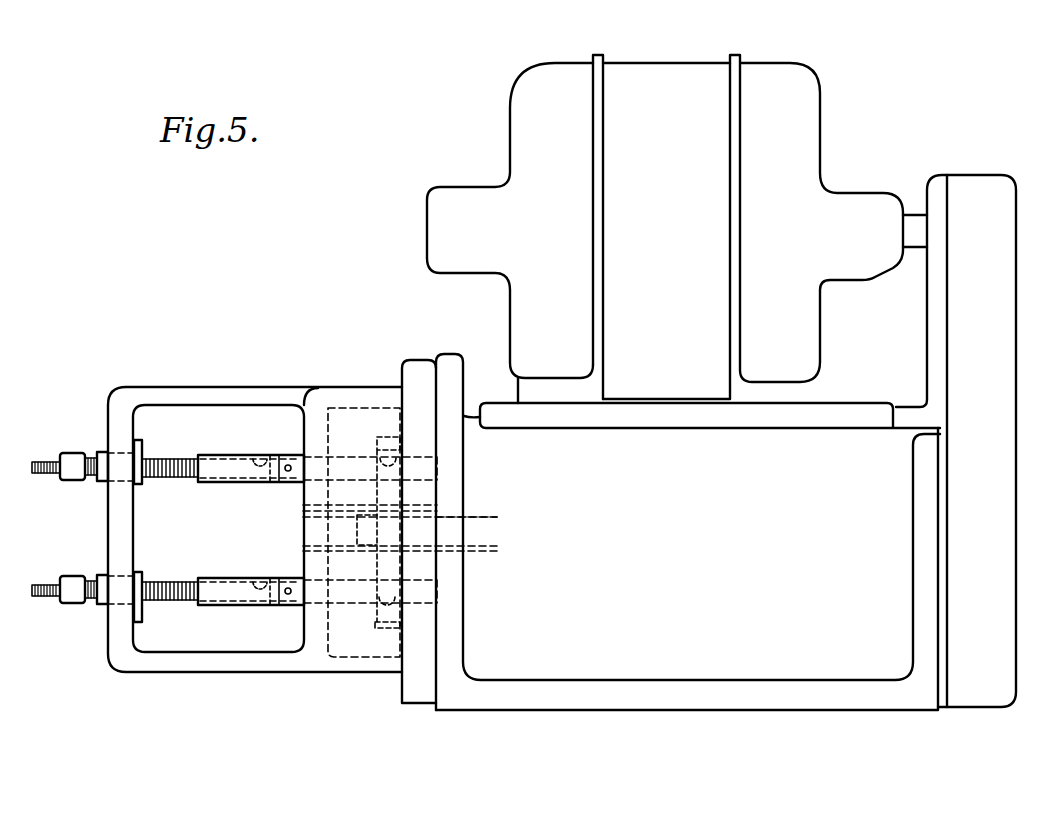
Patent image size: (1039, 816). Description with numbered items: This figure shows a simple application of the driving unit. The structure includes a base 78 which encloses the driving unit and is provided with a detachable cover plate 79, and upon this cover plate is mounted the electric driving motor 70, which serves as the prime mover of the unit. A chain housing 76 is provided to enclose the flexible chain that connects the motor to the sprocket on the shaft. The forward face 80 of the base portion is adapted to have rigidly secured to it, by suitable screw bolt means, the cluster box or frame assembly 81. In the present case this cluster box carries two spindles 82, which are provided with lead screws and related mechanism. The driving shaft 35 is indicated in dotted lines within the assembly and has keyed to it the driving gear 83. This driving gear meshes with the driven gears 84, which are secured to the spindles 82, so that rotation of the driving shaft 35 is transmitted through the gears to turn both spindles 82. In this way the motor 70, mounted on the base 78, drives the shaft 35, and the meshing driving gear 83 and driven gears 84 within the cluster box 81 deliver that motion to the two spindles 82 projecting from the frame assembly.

The driving shaft 35 is at (473, 517).
The electric driving motor 70 is at (677, 229).
The chain housing 76 is at (956, 441).
The base 78 is at (688, 532).
The detachable cover plate 79 is at (826, 413).
The forward face 80 is at (437, 357).
The cluster box or frame assembly 81 is at (323, 392).
The spindles 82 is at (238, 577).
The driving gear 83 is at (390, 557).
The driven gears 84 is at (387, 437).